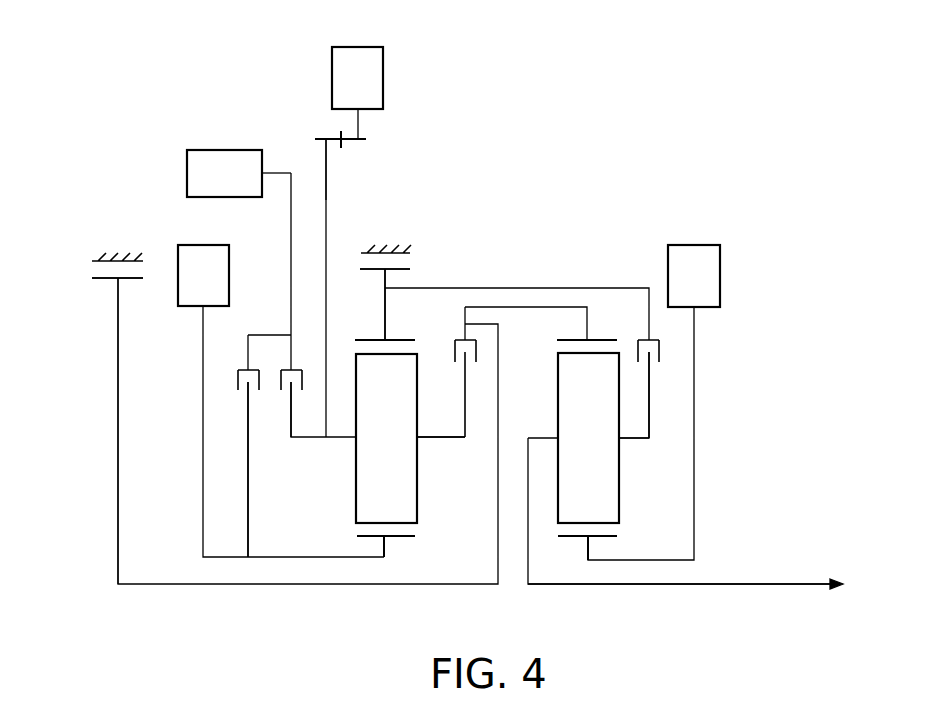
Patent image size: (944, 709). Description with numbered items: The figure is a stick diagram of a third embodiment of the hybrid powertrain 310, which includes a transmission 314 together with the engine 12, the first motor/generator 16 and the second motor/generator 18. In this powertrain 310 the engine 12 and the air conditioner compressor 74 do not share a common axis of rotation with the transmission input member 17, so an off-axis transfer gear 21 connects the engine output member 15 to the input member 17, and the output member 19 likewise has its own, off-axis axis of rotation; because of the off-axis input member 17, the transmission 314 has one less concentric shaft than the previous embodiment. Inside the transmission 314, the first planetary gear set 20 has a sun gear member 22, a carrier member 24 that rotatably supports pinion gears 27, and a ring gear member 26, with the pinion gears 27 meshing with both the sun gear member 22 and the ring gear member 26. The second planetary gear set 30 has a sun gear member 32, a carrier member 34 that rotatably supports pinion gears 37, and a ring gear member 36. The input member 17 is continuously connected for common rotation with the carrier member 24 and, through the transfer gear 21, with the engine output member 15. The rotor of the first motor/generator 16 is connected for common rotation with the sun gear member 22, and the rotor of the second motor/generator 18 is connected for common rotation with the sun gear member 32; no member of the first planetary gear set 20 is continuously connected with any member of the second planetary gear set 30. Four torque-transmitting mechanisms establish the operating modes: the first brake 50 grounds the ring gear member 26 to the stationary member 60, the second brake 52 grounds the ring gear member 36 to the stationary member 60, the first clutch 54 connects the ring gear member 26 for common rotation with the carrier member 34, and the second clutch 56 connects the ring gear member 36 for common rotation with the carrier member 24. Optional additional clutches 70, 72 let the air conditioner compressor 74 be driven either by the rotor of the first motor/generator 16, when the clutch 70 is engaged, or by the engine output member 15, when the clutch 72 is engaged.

The internal combustion engine 12 is at (357, 78).
The engine output member 15 is at (362, 127).
The first motor/generator 16 is at (203, 275).
The input member 17 is at (326, 183).
The second motor/generator 18 is at (694, 276).
The output member 19 is at (782, 584).
The first planetary gear set 20 is at (343, 465).
The off-axis transfer gear 21 is at (320, 139).
The first member 22 is at (400, 537).
The second member 24 is at (438, 437).
The third member 26 is at (375, 340).
The pinion gears 27 is at (386, 438).
The second planetary gear set 30 is at (644, 489).
The first member 32 is at (573, 537).
The second member 34 is at (632, 440).
The third member 36 is at (602, 340).
The pinion gears 37 is at (588, 438).
The first brake 50 is at (414, 261).
The second brake 52 is at (82, 276).
The first clutch 54 is at (656, 376).
The second clutch 56 is at (471, 366).
The stationary member 60 is at (412, 248).
The first additional clutch 70 is at (240, 395).
The second additional clutch 72 is at (287, 395).
The air conditioner compressor 74 is at (239, 173).
The powertrain 310 is at (590, 158).
The transmission 314 is at (521, 240).